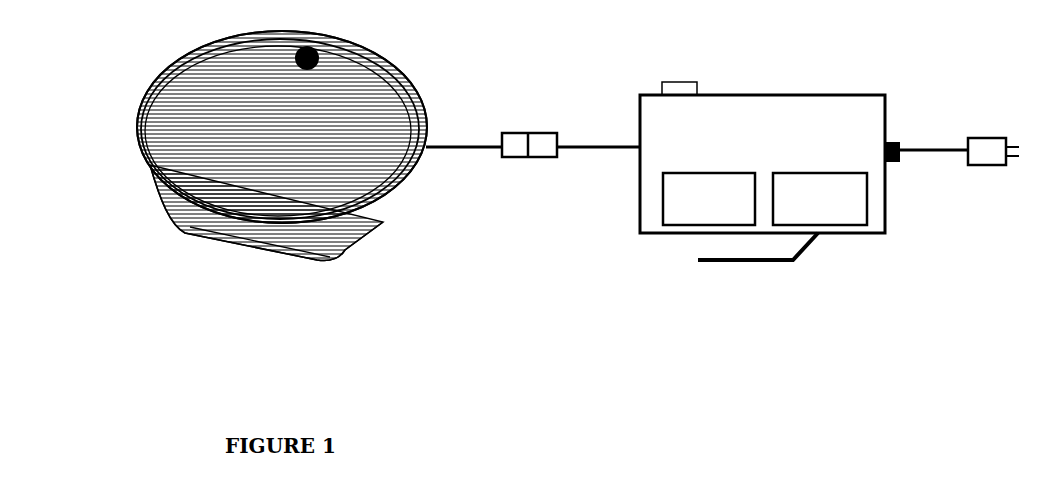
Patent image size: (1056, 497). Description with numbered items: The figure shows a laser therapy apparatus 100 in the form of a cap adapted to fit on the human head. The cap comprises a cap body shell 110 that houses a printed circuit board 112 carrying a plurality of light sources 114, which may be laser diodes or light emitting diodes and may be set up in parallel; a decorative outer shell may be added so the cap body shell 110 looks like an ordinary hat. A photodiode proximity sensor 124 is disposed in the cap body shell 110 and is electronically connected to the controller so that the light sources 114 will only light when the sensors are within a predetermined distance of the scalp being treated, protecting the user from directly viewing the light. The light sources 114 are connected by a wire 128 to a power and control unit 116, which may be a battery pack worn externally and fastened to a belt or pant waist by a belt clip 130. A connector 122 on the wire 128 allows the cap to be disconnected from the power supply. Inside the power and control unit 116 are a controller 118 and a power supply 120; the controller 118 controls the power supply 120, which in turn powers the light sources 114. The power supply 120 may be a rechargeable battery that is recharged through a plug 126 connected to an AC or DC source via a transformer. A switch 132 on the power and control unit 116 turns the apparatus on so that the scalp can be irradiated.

The laser therapy apparatus 100 is at (282, 161).
The cap body shell 110 is at (423, 105).
The printed circuit board 112 is at (407, 75).
The light sources 114 is at (330, 223).
The power and control unit 116 is at (777, 95).
The controller 118 is at (709, 199).
The power supply 120 is at (820, 199).
The connector 122 is at (537, 157).
The photodiode proximity sensor 124 is at (353, 50).
The plug 126 is at (987, 132).
The wire 128 is at (457, 147).
The belt clip 130 is at (770, 263).
The switch 132 is at (682, 82).